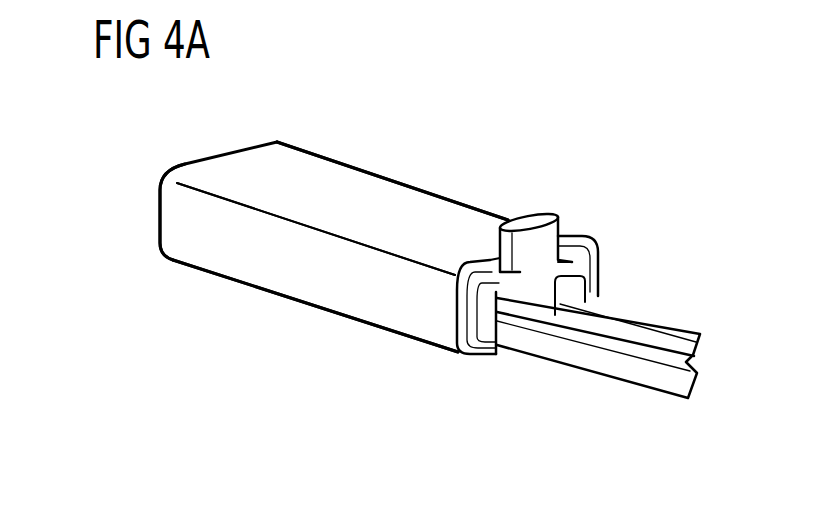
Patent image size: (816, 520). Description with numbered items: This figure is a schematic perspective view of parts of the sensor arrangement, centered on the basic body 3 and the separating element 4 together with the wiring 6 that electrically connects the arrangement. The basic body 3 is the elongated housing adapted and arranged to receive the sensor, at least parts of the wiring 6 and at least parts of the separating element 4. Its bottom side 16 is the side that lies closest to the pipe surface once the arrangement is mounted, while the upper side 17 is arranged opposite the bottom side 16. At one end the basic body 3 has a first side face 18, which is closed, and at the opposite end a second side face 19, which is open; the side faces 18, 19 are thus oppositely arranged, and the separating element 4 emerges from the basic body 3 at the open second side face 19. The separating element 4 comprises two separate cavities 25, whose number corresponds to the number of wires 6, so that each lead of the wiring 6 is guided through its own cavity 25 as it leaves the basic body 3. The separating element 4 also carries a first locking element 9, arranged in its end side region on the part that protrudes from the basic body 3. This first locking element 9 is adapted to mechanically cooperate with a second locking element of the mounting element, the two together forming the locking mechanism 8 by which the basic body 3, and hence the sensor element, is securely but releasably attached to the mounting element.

The basic body 3 is at (308, 148).
The separating element 4 is at (472, 342).
The wiring 6 is at (595, 358).
The locking mechanism 8 is at (545, 273).
The first locking element 9 is at (532, 214).
The bottom side 16 is at (264, 292).
The upper side 17 is at (415, 194).
The first side face 18 is at (158, 203).
The second side face 19 is at (457, 316).
The cavities 25 is at (586, 291).